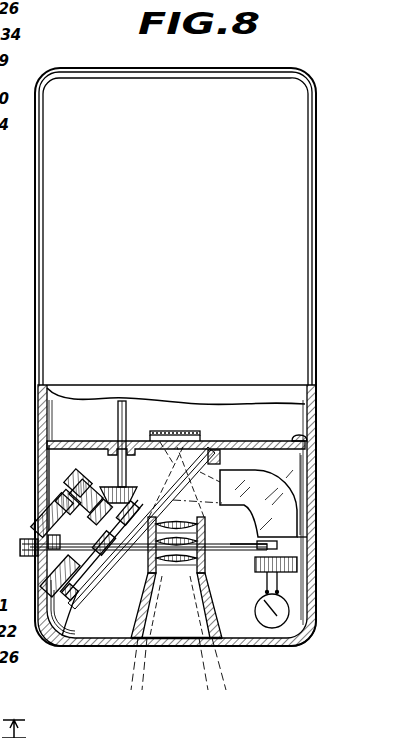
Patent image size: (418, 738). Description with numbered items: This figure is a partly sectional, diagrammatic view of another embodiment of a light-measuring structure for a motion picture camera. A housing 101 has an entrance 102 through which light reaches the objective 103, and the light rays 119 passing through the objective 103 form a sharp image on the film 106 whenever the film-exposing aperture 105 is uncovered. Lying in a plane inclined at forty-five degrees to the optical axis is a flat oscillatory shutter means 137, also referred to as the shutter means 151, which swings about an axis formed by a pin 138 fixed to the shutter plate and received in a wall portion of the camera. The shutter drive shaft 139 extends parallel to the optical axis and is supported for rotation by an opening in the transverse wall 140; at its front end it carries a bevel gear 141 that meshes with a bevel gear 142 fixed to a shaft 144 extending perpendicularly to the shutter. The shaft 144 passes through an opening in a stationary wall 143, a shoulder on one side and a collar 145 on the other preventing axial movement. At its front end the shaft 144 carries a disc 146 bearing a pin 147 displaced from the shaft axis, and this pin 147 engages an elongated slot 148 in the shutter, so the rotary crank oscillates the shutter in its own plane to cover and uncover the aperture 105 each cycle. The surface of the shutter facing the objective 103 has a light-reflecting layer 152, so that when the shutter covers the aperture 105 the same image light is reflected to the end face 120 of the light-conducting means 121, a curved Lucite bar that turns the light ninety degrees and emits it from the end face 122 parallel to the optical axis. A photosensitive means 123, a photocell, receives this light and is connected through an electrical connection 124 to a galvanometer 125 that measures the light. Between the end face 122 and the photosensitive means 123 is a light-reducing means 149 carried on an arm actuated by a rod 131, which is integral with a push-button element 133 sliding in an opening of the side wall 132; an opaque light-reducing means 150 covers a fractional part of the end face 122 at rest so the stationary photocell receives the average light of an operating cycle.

The housing 101 is at (316, 416).
The entrance 102 is at (216, 643).
The objective 103 is at (150, 590).
The film-exposing aperture 105 is at (183, 424).
The film 106 is at (164, 441).
The light rays 119 is at (197, 678).
The end face of light-conducting means 120 is at (236, 480).
The light-conducting means 121 is at (305, 482).
The end face of light-conducting means 122 is at (298, 523).
The photosensitive means 123 is at (297, 565).
The electrical connection 124 is at (280, 590).
The galvanometer 125 is at (290, 613).
The rod 131 is at (52, 574).
The side wall 132 is at (74, 497).
The push-button element 133 is at (28, 543).
The oscillatory shutter means 137 is at (62, 640).
The pin 138 is at (56, 592).
The shutter drive shaft 139 is at (119, 401).
The transverse wall 140 is at (306, 440).
The bevel gear 141 is at (147, 479).
The bevel gear 142 is at (84, 470).
The stationary wall 143 is at (66, 480).
The shaft 144 is at (46, 512).
The collar 145 is at (44, 452).
The disc 146 is at (100, 538).
The pin 147 is at (118, 566).
The elongated slot 148 is at (121, 549).
The light-reducing means 149 is at (258, 543).
The opaque light-reducing means 150 is at (249, 551).
The shutter means 151 is at (207, 450).
The light-reflecting layer 152 is at (222, 455).